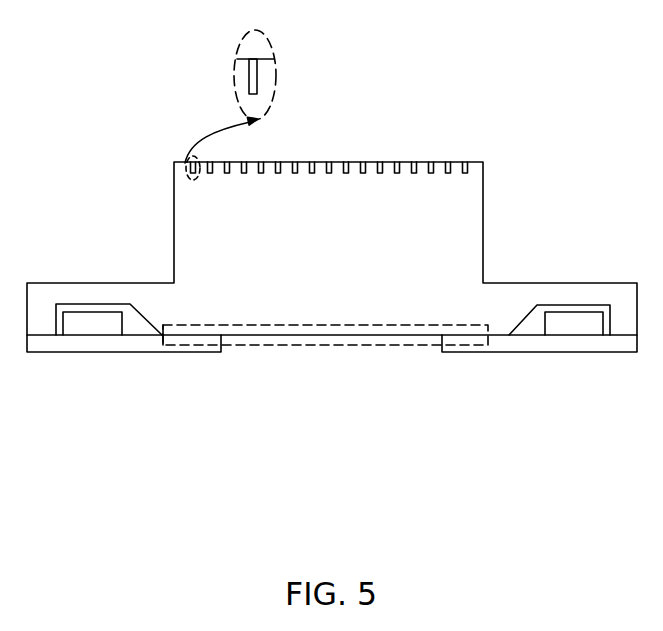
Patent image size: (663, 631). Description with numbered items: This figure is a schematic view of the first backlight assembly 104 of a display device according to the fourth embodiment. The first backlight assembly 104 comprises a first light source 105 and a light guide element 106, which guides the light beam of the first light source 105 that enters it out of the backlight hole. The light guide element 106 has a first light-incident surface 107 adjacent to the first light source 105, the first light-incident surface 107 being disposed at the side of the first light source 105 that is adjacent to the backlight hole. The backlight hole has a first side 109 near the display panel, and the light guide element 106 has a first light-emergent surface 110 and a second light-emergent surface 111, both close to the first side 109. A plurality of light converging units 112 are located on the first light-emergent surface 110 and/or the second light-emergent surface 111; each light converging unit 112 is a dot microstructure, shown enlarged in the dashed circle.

The first backlight assembly 104 is at (332, 335).
The first light source 105 is at (77, 325).
The light guide element 106 is at (273, 308).
The first light-incident surface 107 is at (518, 325).
The first side 109 is at (360, 115).
The first light-emergent surface 110 is at (380, 138).
The second light-emergent surface 111 is at (353, 346).
The light converging unit 112 is at (250, 82).